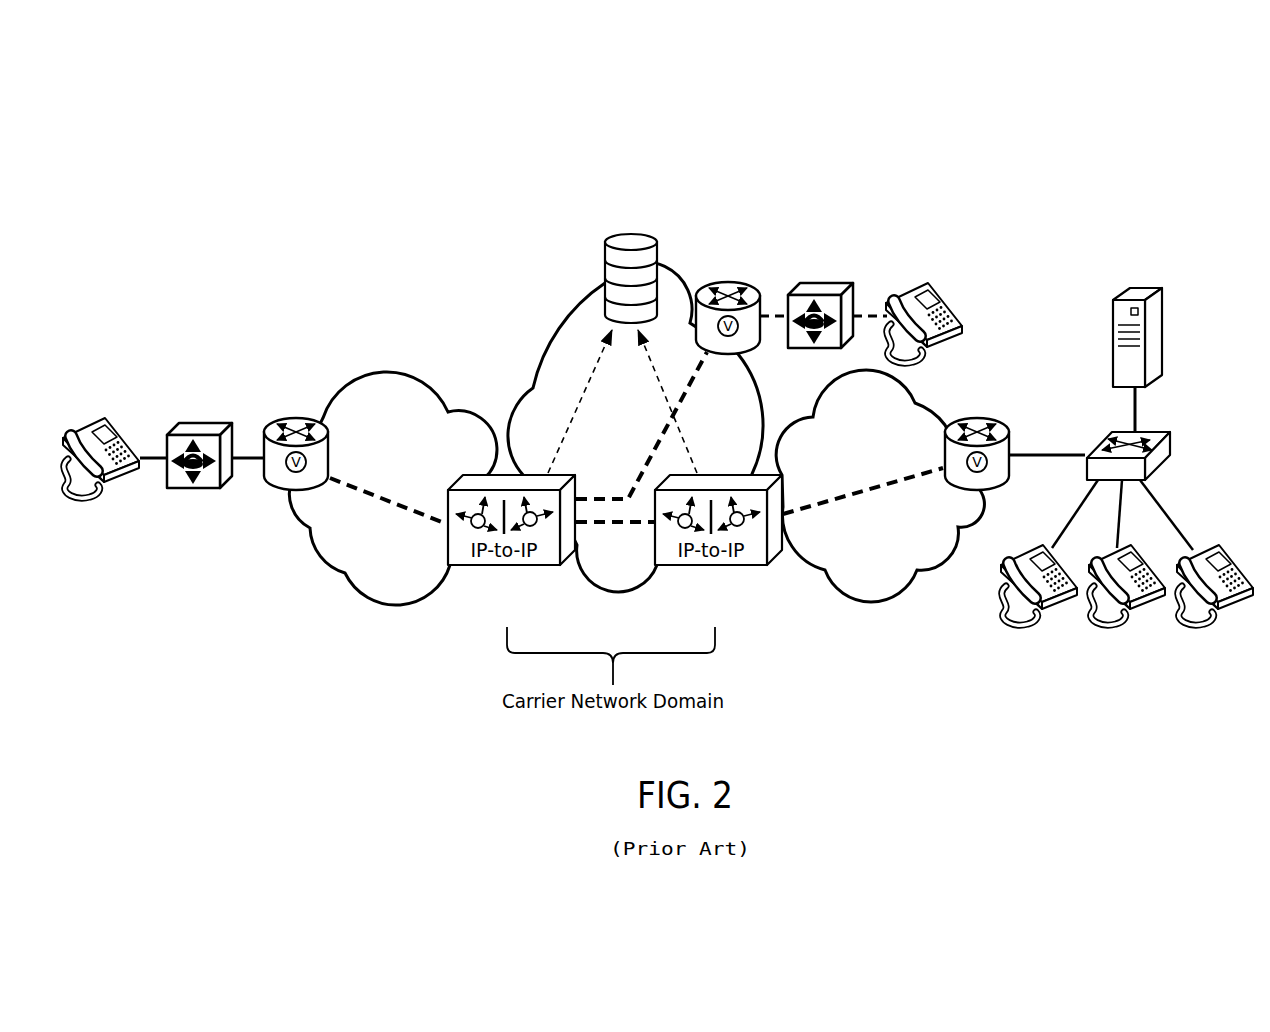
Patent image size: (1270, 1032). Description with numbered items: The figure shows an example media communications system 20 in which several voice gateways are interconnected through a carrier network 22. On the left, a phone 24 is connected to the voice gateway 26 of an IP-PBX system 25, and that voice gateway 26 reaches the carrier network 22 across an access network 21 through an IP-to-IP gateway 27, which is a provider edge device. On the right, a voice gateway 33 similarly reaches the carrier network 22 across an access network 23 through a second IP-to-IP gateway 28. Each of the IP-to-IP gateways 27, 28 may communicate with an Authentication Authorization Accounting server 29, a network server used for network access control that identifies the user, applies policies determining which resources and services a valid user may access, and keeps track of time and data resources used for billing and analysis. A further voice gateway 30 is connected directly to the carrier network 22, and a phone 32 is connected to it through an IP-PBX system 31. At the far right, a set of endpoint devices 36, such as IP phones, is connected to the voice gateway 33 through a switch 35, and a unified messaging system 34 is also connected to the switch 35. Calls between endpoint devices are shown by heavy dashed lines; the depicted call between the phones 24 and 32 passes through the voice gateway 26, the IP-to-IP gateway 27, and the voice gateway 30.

The media communications system 20 is at (298, 695).
The access network 21 is at (338, 577).
The carrier network 22 is at (547, 337).
The access network 23 is at (877, 604).
The phone 24 is at (112, 422).
The IP-PBX system 25 is at (211, 420).
The voice gateway 26 is at (296, 418).
The IP-to-IP gateway 27 is at (512, 568).
The IP-to-IP gateway 28 is at (730, 568).
The Authentication Authorization Accounting (AAA) server 29 is at (607, 244).
The voice gateway 30 is at (727, 280).
The IP-PBX system 31 is at (827, 283).
The phone 32 is at (937, 282).
The voice gateway 33 is at (993, 420).
The unified messaging (UM) system 34 is at (1163, 316).
The switch 35 is at (1155, 432).
The set of endpoint devices 36 is at (997, 627).